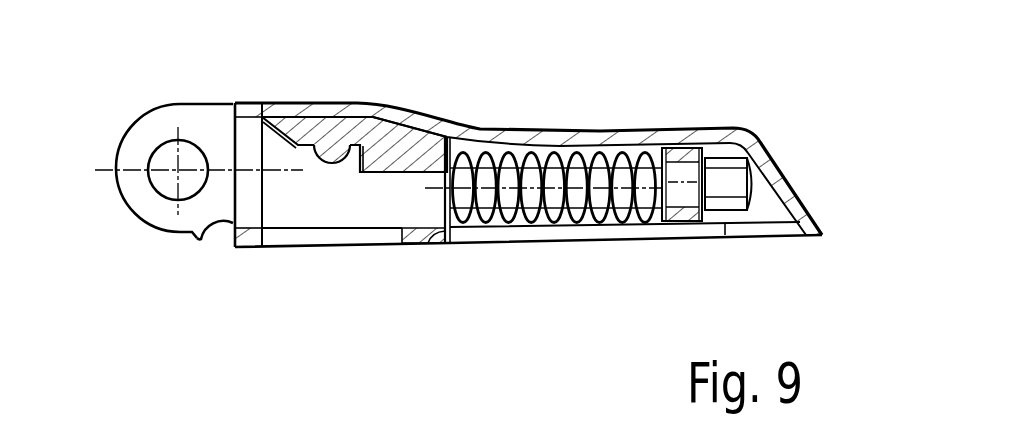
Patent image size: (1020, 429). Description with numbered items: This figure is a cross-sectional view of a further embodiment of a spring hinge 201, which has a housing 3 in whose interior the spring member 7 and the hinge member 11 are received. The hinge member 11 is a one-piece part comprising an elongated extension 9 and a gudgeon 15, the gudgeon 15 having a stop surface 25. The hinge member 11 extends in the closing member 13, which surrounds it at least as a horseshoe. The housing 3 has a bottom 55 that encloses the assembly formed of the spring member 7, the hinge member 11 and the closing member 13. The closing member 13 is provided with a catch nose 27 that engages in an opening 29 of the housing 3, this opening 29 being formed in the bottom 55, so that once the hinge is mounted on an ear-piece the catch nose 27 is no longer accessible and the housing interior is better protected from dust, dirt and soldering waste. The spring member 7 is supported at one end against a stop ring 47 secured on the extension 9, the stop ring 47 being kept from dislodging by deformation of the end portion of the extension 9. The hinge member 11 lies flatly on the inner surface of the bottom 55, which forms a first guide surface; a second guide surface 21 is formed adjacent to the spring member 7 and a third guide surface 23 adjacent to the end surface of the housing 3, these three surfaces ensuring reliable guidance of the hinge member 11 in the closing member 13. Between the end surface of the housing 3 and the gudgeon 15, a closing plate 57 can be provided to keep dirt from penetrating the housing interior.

The spring hinge 201 is at (748, 106).
The housing 3 is at (773, 143).
The gudgeon 15 is at (132, 152).
The closing plate 57 is at (200, 238).
The stop surface 25 is at (232, 104).
The closing member 13 is at (300, 128).
The third guide surface 23 is at (350, 128).
The second guide surface 21 is at (405, 148).
The hinge member 11 is at (285, 215).
The opening 29 is at (400, 235).
The catch nose 27 is at (427, 242).
The spring member 7 is at (483, 228).
The bottom 55 is at (537, 232).
The extension 9 is at (678, 190).
The stop ring 47 is at (688, 222).